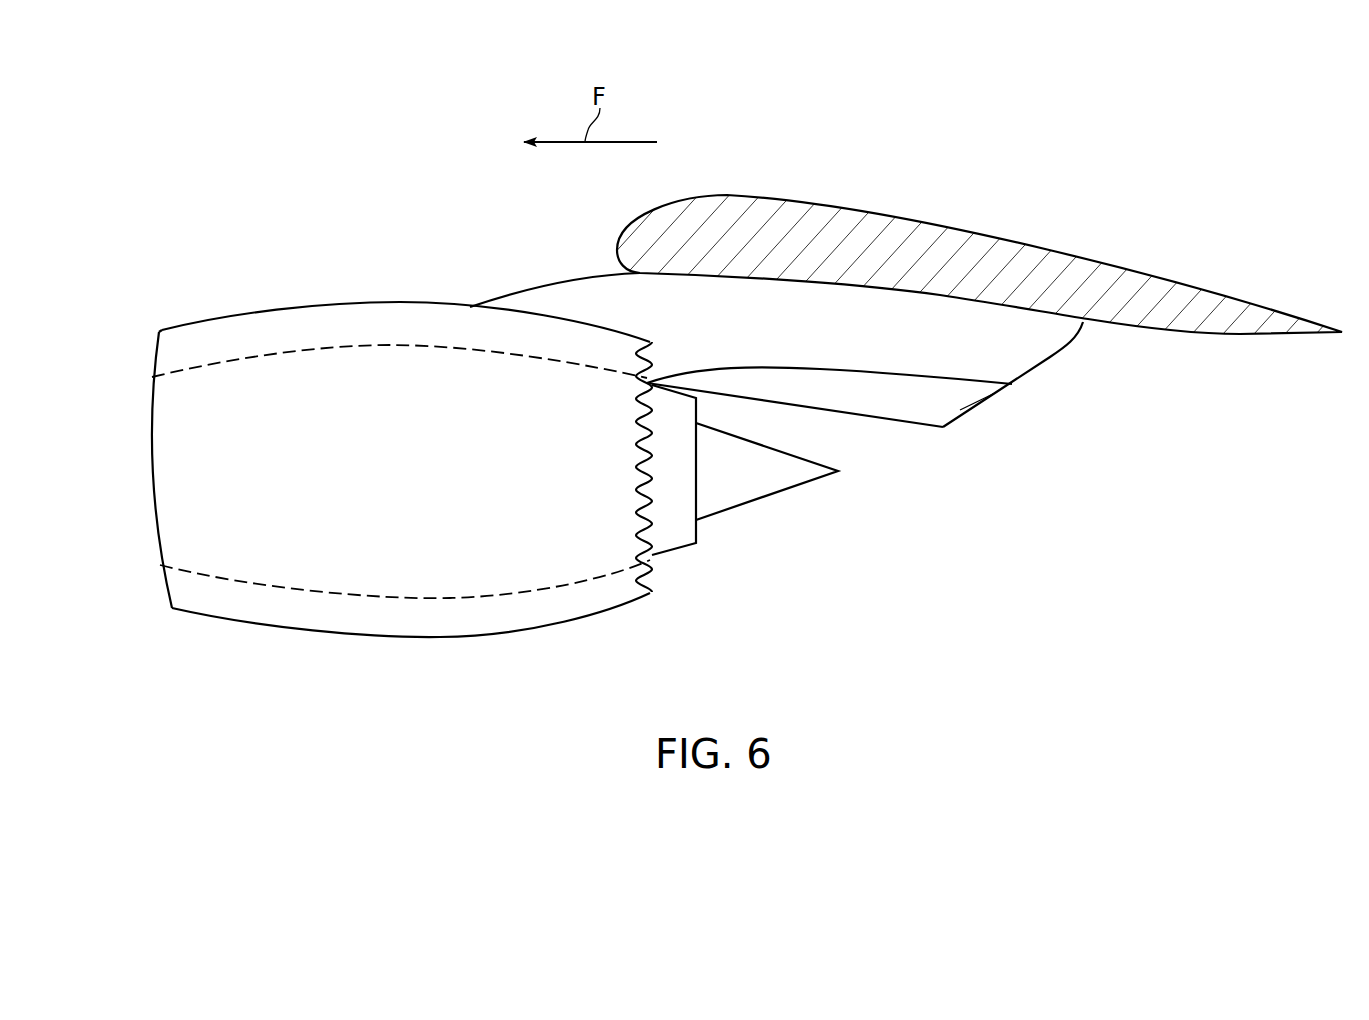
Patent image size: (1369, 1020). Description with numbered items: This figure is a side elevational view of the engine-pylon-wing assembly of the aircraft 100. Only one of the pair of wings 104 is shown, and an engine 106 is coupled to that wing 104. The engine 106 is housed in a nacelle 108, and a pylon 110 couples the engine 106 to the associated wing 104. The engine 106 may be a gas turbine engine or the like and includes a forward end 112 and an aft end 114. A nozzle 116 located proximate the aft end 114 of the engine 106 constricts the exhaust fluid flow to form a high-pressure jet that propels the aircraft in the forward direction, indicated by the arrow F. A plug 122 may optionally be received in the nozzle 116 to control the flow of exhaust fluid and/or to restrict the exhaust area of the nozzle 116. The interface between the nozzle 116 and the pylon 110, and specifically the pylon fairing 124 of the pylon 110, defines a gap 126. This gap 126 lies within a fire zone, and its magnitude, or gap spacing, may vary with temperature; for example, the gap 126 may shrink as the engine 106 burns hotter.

The aircraft 100 is at (1086, 167).
The wing 104 is at (966, 224).
The engine 106 is at (388, 345).
The nacelle 108 is at (417, 638).
The pylon 110 is at (1028, 352).
The forward end 112 is at (153, 592).
The aft end 114 is at (745, 535).
The nozzle 116 is at (670, 545).
The plug 122 is at (802, 486).
The pylon fairing 124 is at (948, 399).
The gap 126 is at (735, 414).